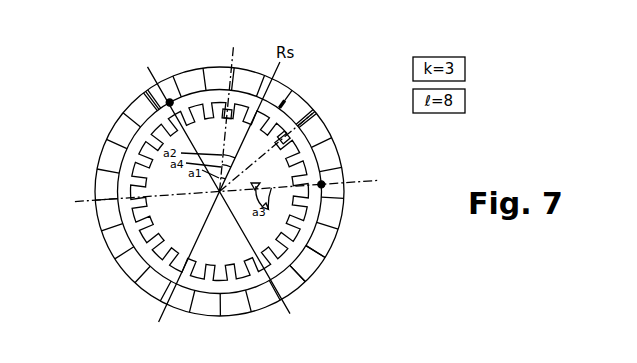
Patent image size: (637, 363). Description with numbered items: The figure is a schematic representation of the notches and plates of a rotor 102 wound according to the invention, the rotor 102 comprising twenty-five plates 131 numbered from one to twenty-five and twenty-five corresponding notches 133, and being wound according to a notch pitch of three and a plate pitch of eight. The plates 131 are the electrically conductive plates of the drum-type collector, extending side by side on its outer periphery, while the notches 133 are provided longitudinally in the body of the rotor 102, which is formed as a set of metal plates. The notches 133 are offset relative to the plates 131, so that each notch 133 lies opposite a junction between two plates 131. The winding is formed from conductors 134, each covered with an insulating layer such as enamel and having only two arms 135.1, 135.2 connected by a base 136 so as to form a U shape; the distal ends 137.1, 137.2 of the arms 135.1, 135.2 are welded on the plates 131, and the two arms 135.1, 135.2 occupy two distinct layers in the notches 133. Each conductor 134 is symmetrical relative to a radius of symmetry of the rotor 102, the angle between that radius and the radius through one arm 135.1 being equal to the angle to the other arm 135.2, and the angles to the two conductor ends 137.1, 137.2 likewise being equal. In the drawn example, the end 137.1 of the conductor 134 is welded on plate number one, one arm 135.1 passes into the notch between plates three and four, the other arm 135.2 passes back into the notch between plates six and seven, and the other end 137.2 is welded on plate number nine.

The rotor 102 is at (327, 223).
The plates 131 is at (319, 248).
The notches 133 is at (100, 157).
The conductor 134 is at (283, 103).
The arm 135.1 is at (312, 114).
The arm 135.2 is at (227, 109).
The base 136 is at (172, 121).
The distal end 137.1 is at (321, 184).
The distal end 137.2 is at (170, 102).